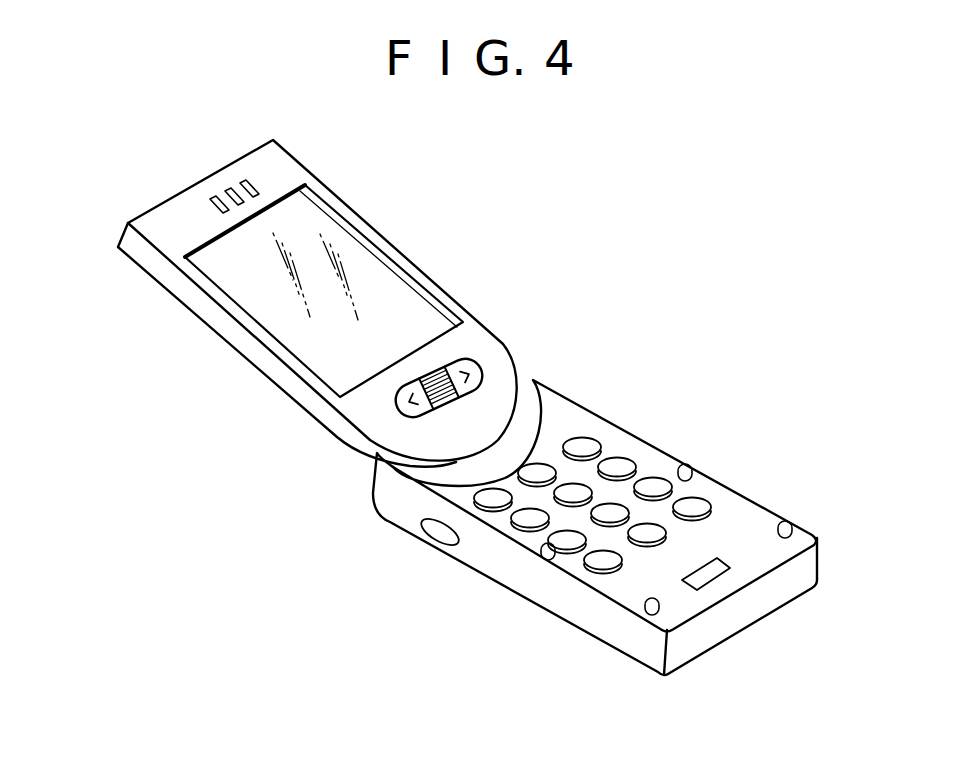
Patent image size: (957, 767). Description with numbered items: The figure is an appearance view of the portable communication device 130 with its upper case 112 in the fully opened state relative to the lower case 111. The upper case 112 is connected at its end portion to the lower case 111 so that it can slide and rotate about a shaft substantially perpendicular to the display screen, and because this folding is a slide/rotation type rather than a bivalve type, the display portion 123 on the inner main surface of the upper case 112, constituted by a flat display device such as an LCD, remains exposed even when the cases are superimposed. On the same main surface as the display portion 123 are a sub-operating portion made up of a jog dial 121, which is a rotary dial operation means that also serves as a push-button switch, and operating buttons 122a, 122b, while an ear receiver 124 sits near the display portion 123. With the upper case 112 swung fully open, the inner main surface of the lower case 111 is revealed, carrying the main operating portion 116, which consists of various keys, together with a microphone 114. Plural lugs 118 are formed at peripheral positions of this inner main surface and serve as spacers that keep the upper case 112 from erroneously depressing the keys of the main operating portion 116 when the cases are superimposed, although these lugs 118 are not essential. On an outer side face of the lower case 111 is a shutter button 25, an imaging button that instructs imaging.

The lower case 111 is at (627, 637).
The upper case 112 is at (185, 292).
The microphone 114 is at (708, 572).
The main operating portion 116 is at (607, 413).
The lugs 118 is at (690, 472).
The jog dial 121 is at (432, 363).
The operating button 122a is at (477, 363).
The operating button 122b is at (381, 412).
The display portion 123 is at (342, 248).
The ear receiver 124 is at (225, 192).
The portable communication device 130 is at (691, 263).
The shutter button 25 is at (432, 532).